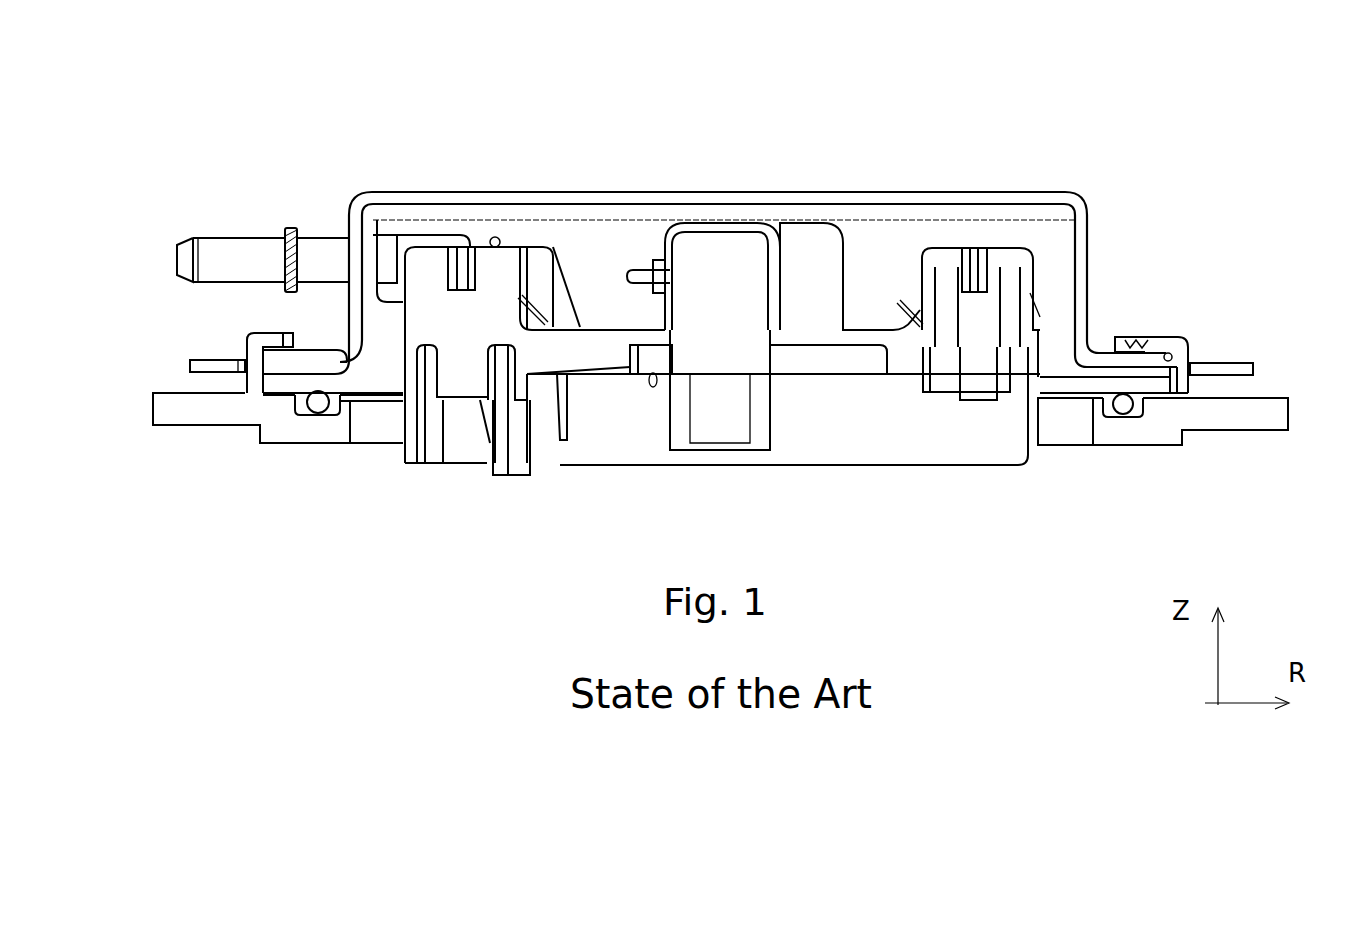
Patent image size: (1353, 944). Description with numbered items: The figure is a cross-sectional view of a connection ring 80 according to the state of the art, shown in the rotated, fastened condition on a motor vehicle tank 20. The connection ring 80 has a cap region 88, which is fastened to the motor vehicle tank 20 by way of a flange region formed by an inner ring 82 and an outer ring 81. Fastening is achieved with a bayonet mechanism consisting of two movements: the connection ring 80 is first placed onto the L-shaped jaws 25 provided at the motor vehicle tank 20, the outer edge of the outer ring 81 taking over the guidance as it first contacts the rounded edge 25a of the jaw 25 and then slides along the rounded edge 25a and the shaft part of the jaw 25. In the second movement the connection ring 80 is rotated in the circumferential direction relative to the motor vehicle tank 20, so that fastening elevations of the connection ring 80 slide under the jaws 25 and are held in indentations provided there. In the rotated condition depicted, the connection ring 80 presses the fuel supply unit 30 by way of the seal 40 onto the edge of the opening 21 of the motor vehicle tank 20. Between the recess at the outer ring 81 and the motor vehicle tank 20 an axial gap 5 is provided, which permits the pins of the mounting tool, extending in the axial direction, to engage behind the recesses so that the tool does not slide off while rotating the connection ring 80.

The connection ring 80 is at (1078, 150).
The cap region 88 is at (1082, 258).
The inner ring 82 is at (312, 346).
The outer ring 81 is at (192, 360).
The seal 40 is at (316, 404).
The fuel supply unit 30 is at (843, 342).
The opening 21 is at (1068, 458).
The motor vehicle tank 20 is at (1222, 420).
The axial gap 5 is at (1268, 393).
The jaw 25 is at (1181, 320).
The rounded edge 25a is at (1186, 337).